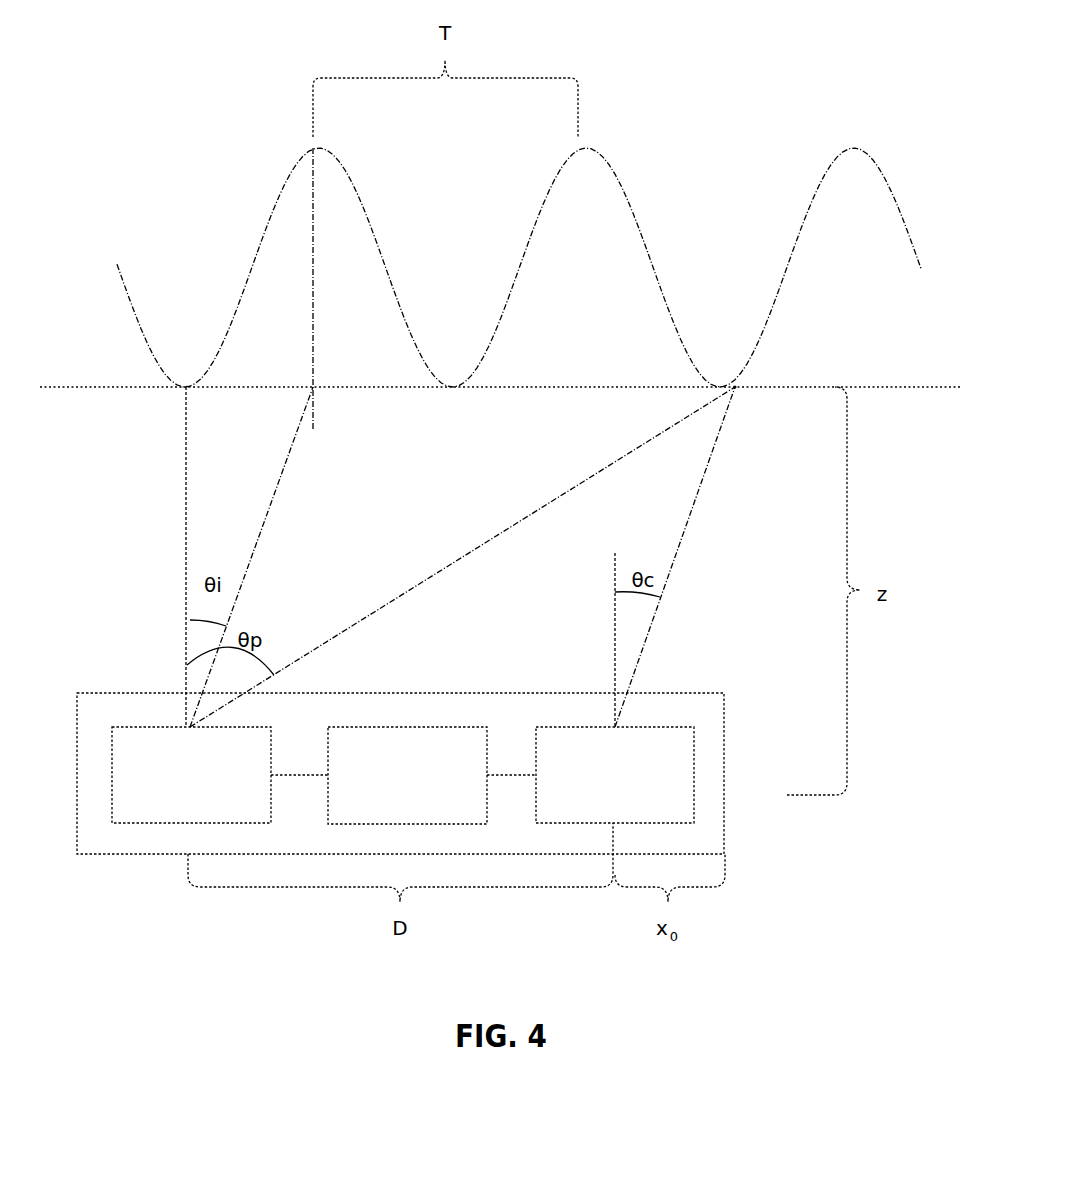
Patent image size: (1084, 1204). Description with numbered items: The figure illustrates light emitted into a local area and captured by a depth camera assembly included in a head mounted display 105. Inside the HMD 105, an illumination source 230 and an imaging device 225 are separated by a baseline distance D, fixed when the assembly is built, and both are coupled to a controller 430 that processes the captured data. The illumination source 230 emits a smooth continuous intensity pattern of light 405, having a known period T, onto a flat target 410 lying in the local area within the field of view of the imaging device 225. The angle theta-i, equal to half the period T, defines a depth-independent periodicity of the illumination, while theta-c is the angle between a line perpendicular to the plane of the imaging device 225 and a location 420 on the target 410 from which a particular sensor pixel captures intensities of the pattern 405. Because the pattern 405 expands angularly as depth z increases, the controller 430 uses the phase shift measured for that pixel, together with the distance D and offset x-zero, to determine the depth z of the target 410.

The continuous intensity pattern of light 405 is at (267, 201).
The flat target 410 is at (125, 384).
The point on pattern 420 is at (736, 392).
The head mounted display 105 is at (725, 775).
The illumination source 230 is at (191, 775).
The controller 430 is at (407, 775).
The imaging device 225 is at (615, 775).